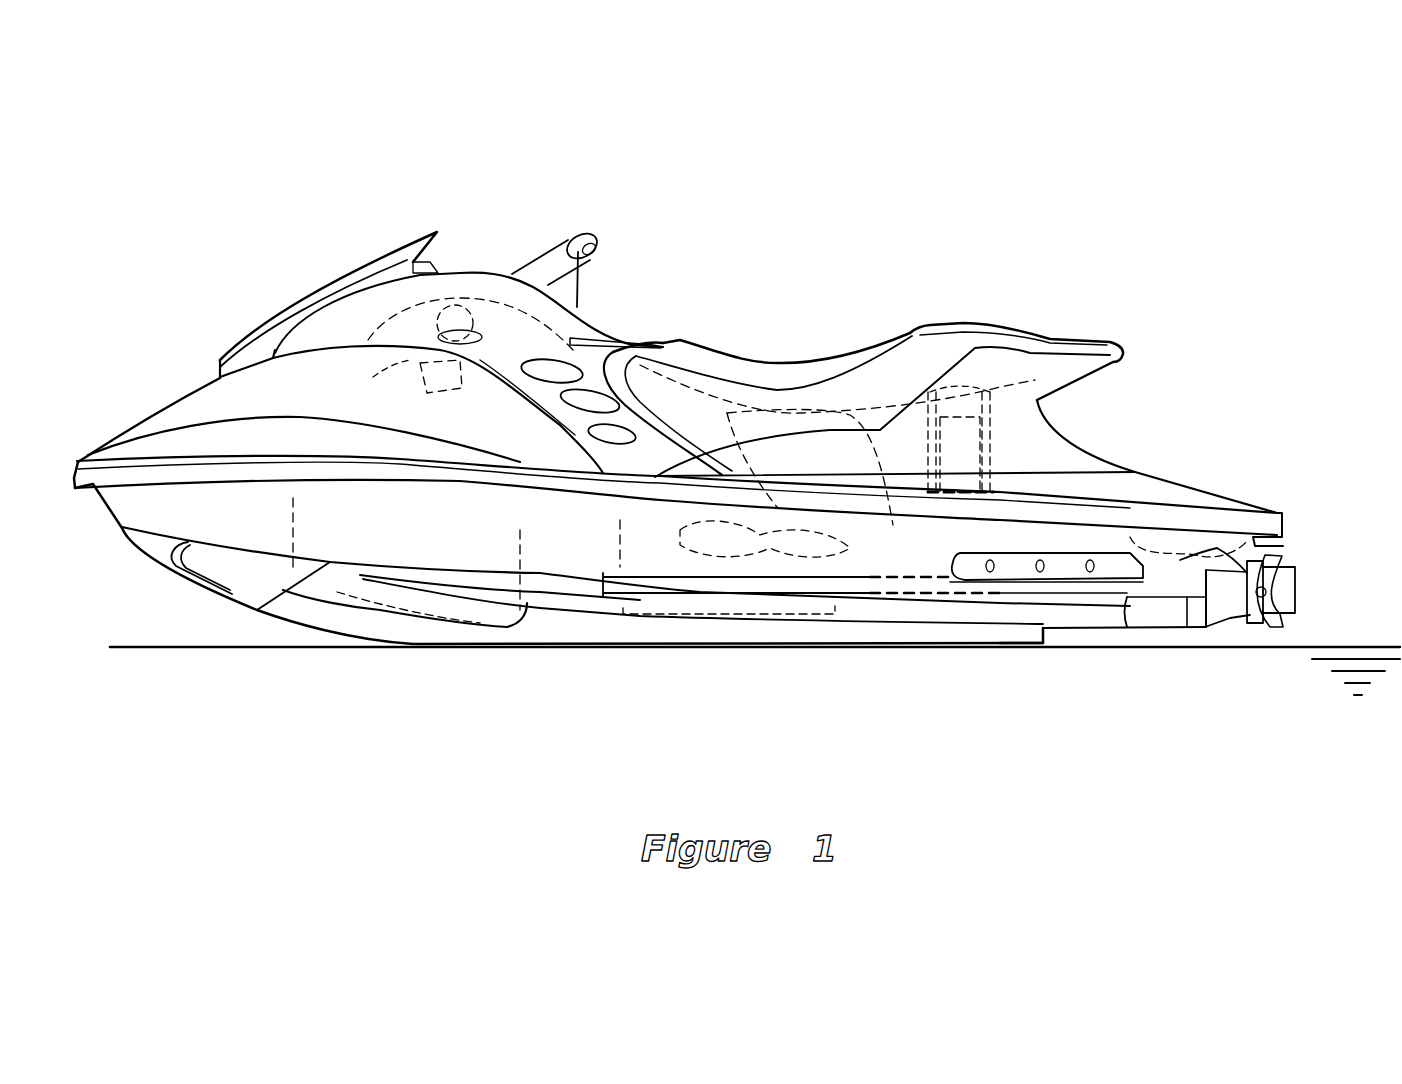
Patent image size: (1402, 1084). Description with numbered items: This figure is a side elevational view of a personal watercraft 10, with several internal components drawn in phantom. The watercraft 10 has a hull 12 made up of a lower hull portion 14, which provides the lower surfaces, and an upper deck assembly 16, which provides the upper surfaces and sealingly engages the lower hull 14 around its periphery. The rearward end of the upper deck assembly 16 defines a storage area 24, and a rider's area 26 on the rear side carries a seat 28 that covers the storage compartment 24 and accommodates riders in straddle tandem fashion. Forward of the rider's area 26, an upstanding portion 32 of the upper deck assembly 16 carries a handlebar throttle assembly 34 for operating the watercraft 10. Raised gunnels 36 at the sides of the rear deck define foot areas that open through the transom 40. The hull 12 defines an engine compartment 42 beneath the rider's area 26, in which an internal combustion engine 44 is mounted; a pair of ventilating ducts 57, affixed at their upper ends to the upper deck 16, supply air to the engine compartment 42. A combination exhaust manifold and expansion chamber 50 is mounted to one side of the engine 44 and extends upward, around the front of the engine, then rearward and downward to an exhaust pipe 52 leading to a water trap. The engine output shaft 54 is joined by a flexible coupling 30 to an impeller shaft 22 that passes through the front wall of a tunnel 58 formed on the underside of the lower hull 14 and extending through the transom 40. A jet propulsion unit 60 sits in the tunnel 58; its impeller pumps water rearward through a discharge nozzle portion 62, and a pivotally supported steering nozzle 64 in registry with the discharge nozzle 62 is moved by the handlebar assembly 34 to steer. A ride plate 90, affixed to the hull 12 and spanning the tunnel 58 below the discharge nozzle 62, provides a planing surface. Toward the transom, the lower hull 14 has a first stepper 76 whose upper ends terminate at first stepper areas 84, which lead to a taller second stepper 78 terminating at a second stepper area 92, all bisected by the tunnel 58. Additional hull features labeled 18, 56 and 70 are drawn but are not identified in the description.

The watercraft 10 is at (845, 251).
The hull 12 is at (193, 395).
The lower hull portion 14 is at (150, 547).
The upper deck assembly 16 is at (160, 423).
The hull side 18 is at (290, 528).
The impeller shaft 22 is at (995, 625).
The storage area 24 is at (993, 447).
The rider's area 26 is at (820, 350).
The seat 28 is at (740, 358).
The flexible coupling 30 is at (1090, 477).
The upstanding portion 32 is at (618, 322).
The handlebar throttle assembly 34 is at (580, 240).
The raised gunnels 36 is at (273, 473).
The transom 40 is at (1283, 541).
The engine compartment 42 is at (573, 560).
The internal combustion engine 44 is at (733, 618).
The combination exhaust manifold and expansion chamber 50 is at (540, 437).
The exhaust pipe 52 is at (833, 553).
The engine output shaft 54 is at (893, 577).
The sponson 56 is at (487, 593).
The ventilating ducts 57 is at (365, 378).
The tunnel 58 is at (1190, 530).
The jet propulsion unit 60 is at (1212, 648).
The discharge nozzle portion 62 is at (1230, 620).
The steering nozzle 64 is at (1290, 583).
The forward sponson 70 is at (350, 563).
The first stepper 76 is at (1058, 644).
The second stepper 78 is at (1137, 613).
The first stepper areas 84 is at (1090, 630).
The ride plate 90 is at (1170, 643).
The second stepper area 92 is at (1192, 630).